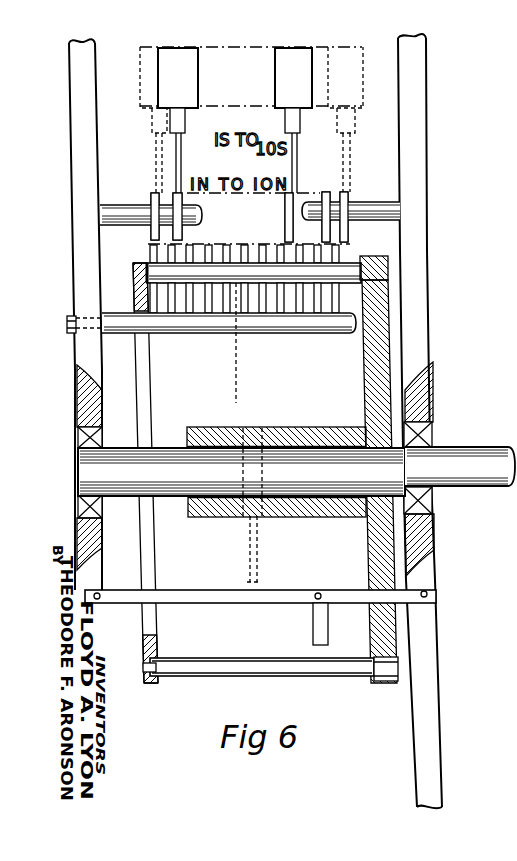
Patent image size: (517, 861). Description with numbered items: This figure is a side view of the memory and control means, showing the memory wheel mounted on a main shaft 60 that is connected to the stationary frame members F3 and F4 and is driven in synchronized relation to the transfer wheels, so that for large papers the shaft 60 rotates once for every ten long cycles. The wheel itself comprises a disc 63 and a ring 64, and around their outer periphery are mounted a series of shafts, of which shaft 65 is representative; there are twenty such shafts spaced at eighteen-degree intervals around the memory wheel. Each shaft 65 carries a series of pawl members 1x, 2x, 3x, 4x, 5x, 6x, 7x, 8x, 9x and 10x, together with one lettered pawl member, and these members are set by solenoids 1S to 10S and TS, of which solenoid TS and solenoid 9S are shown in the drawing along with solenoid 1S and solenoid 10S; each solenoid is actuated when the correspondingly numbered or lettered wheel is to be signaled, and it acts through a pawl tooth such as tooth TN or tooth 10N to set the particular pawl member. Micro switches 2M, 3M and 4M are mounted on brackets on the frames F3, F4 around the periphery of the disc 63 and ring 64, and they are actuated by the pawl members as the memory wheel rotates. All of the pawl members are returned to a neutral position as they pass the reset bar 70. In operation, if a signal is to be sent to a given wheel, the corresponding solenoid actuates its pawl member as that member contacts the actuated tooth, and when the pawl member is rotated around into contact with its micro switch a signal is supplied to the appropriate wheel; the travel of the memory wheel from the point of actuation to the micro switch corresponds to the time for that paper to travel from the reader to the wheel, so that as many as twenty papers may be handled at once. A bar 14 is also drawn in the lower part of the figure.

The solenoid 10S is at (148, 117).
The solenoid TS is at (198, 93).
The solenoid 9S is at (310, 108).
The solenoid 1S is at (353, 112).
The pawl tooth 10N is at (151, 228).
The pawl tooth TN is at (181, 238).
The shaft 65 is at (345, 264).
The ring 64 is at (134, 283).
The reset bar 70 is at (133, 331).
The pawl member 10x is at (160, 302).
The pawl member 7x is at (177, 302).
The pawl member 6x is at (195, 302).
The pawl member 2x is at (215, 302).
The pawl member 5x is at (235, 302).
The pawl member 3x is at (245, 302).
The pawl member 9x is at (278, 302).
The pawl member 4x is at (300, 302).
The pawl member 8x is at (308, 302).
The pawl member 1x is at (340, 302).
The micro switch 2M is at (235, 388).
The micro switch 3M is at (250, 518).
The micro switch 4M is at (313, 630).
The bar 14 is at (163, 590).
The disc 63 is at (370, 636).
The main shaft 60 is at (452, 448).
The stationary frame member F3 is at (78, 396).
The stationary frame member F4 is at (430, 406).